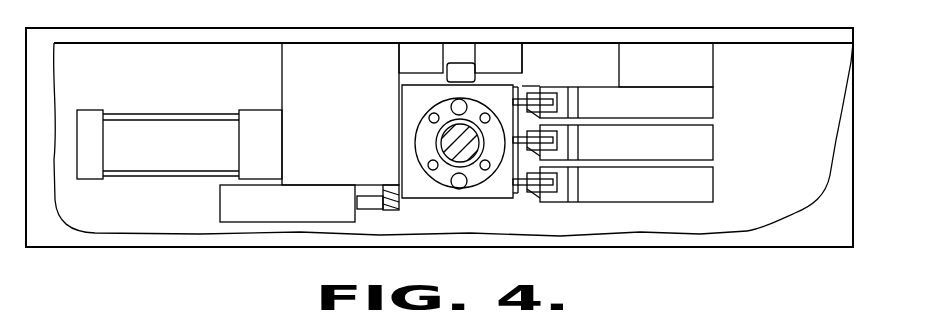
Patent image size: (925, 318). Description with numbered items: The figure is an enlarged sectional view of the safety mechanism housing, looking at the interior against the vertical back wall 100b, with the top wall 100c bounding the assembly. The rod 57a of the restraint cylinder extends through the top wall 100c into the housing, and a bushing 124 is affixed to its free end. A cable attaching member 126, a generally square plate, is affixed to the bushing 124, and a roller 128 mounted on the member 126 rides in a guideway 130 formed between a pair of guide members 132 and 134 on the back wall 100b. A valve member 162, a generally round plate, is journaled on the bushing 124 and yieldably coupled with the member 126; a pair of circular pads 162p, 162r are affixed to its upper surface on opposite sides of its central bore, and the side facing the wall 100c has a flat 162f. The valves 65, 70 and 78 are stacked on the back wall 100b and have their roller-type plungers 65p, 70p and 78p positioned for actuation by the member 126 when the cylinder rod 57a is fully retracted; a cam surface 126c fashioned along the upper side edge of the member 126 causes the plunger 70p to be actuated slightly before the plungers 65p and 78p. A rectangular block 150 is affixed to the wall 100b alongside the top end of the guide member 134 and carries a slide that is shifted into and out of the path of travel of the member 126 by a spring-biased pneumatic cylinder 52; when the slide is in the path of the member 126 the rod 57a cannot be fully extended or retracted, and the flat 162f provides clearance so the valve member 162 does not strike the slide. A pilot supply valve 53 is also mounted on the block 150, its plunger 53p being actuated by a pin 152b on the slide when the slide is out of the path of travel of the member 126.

The pneumatic cylinder 52 is at (117, 112).
The pilot supply valve 53 is at (226, 201).
The plunger 53p is at (370, 209).
The rod 57a is at (443, 130).
The valve 65 is at (700, 145).
The roller-type plunger 65p is at (580, 145).
The valve 70 is at (700, 106).
The roller-type plunger 70p is at (580, 104).
The valve 78 is at (700, 191).
The roller-type plunger 78p is at (520, 193).
The back wall 100b is at (690, 36).
The top wall 100c is at (62, 236).
The bushing 124 is at (428, 135).
The cable attaching member 126 is at (448, 200).
The cam surface 126c is at (534, 106).
The roller 128 is at (465, 68).
The guideway 130 is at (450, 62).
The guide member 132 is at (524, 50).
The guide member 134 is at (416, 50).
The rectangular block 150 is at (282, 59).
The pin 152b is at (395, 211).
The valve member 162 is at (493, 185).
The flat 162f is at (415, 145).
The circular pad 162p is at (462, 190).
The circular pad 162r is at (452, 103).